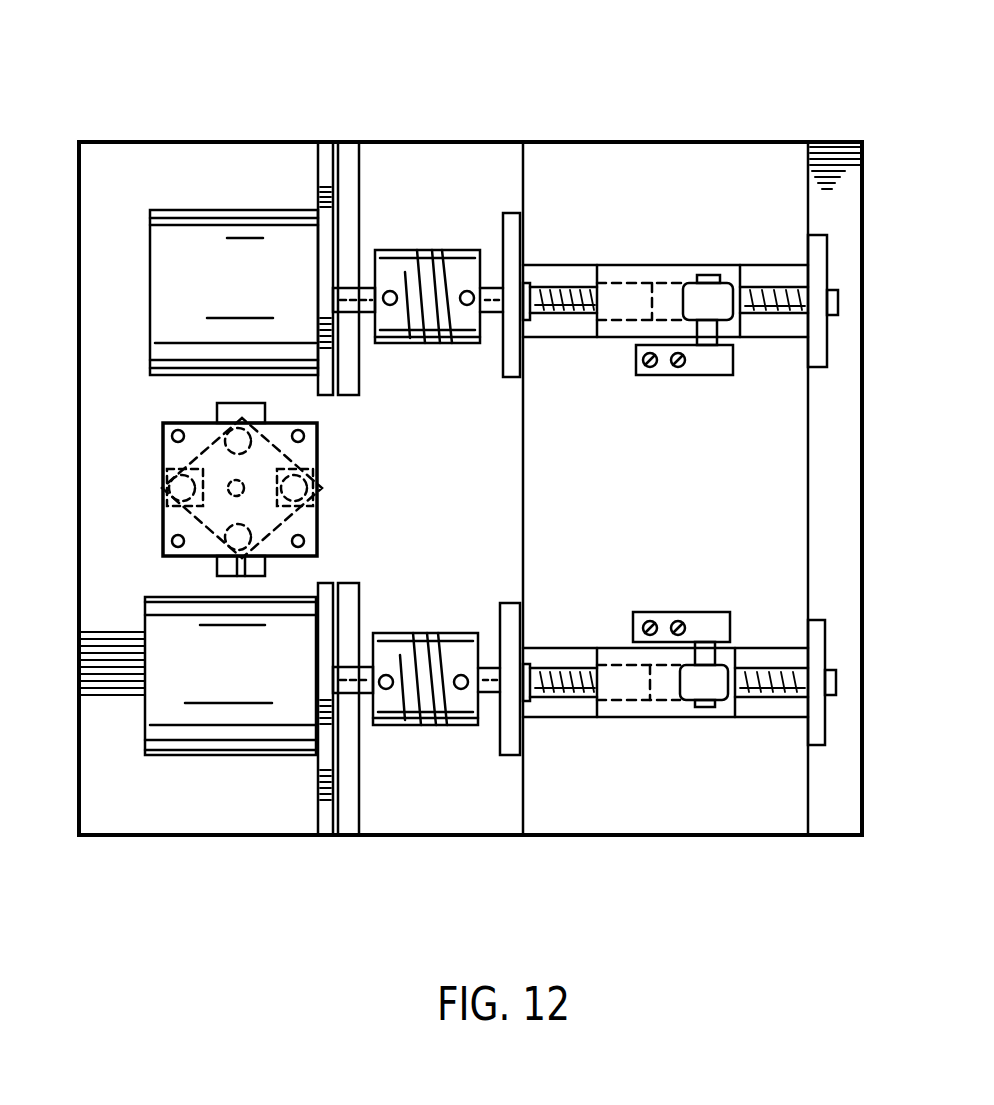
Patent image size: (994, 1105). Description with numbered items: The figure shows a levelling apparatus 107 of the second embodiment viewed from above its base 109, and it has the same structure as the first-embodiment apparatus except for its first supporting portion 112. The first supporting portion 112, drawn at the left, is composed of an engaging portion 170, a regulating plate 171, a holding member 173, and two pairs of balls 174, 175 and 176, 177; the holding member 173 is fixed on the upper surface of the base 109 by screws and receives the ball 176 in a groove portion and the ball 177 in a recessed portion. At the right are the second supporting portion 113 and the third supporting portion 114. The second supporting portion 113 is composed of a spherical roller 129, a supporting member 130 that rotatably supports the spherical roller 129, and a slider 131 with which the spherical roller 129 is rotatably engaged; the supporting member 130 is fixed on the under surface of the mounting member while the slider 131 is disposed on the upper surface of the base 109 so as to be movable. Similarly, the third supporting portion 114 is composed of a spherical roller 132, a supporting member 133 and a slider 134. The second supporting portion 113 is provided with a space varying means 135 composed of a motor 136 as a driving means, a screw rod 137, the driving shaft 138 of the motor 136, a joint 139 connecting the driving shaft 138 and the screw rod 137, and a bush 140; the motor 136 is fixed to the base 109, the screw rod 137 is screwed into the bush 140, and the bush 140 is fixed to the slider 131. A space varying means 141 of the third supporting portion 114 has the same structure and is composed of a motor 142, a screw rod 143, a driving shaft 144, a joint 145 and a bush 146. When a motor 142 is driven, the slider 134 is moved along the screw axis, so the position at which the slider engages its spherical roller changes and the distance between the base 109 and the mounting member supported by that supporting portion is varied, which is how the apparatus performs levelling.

The levelling apparatus 107 is at (664, 100).
The base 109 is at (221, 815).
The first supporting portion 112 is at (345, 553).
The second supporting portion 113 is at (755, 563).
The third supporting portion 114 is at (755, 445).
The spherical roller 129 is at (715, 680).
The supporting member 130 is at (672, 612).
The slider 131 is at (617, 660).
The spherical roller 132 is at (727, 342).
The supporting member 133 is at (665, 376).
The slider 134 is at (613, 337).
The space varying means 135 is at (628, 880).
The motor 136 is at (255, 755).
The screw rod 137 is at (548, 717).
The driving shaft 138 is at (340, 705).
The joint 139 is at (445, 725).
The bush 140 is at (577, 717).
The space varying means 141 is at (625, 85).
The motor 142 is at (283, 210).
The screw rod 143 is at (543, 265).
The driving shaft 144 is at (352, 285).
The joint 145 is at (455, 250).
The bush 146 is at (583, 265).
The engaging portion 170 is at (298, 455).
The regulating plate 171 is at (170, 543).
The holding member 173 is at (265, 410).
The ball 174 is at (167, 487).
The ball 175 is at (316, 490).
The ball 176 is at (316, 531).
The ball 177 is at (212, 425).